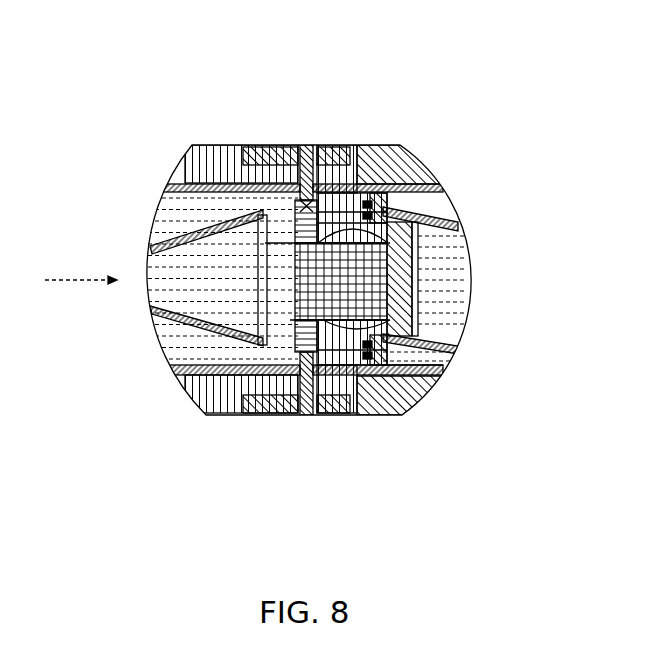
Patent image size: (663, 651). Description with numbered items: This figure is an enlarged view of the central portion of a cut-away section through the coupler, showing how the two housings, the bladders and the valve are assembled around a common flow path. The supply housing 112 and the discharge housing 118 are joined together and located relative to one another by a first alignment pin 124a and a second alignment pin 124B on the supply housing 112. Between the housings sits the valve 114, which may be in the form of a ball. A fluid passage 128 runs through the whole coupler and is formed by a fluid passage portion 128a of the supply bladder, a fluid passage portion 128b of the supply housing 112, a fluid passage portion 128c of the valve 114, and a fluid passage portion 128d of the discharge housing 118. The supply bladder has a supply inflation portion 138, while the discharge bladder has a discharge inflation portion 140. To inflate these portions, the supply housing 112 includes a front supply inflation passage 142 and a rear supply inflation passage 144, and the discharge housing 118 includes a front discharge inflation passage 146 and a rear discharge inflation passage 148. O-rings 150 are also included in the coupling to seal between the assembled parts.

The supply housing 112 is at (375, 144).
The valve 114 is at (395, 344).
The discharge housing 118 is at (267, 144).
The first alignment pin 124a is at (315, 400).
The second alignment pin 124B is at (313, 144).
The fluid passage 128 is at (73, 280).
The fluid passage portion of supply bladder 128a is at (163, 268).
The fluid passage portion of supply housing 128b is at (283, 290).
The fluid passage portion of valve 128c is at (407, 398).
The fluid passage portion of discharge housing 128d is at (447, 258).
The supply inflation portion 138 is at (160, 222).
The discharge inflation portion 140 is at (445, 215).
The front supply inflation passage 142 is at (337, 144).
The rear supply inflation passage 144 is at (307, 414).
The front discharge inflation passage 146 is at (418, 200).
The rear discharge inflation passage 148 is at (412, 390).
The O-rings 150 is at (382, 178).